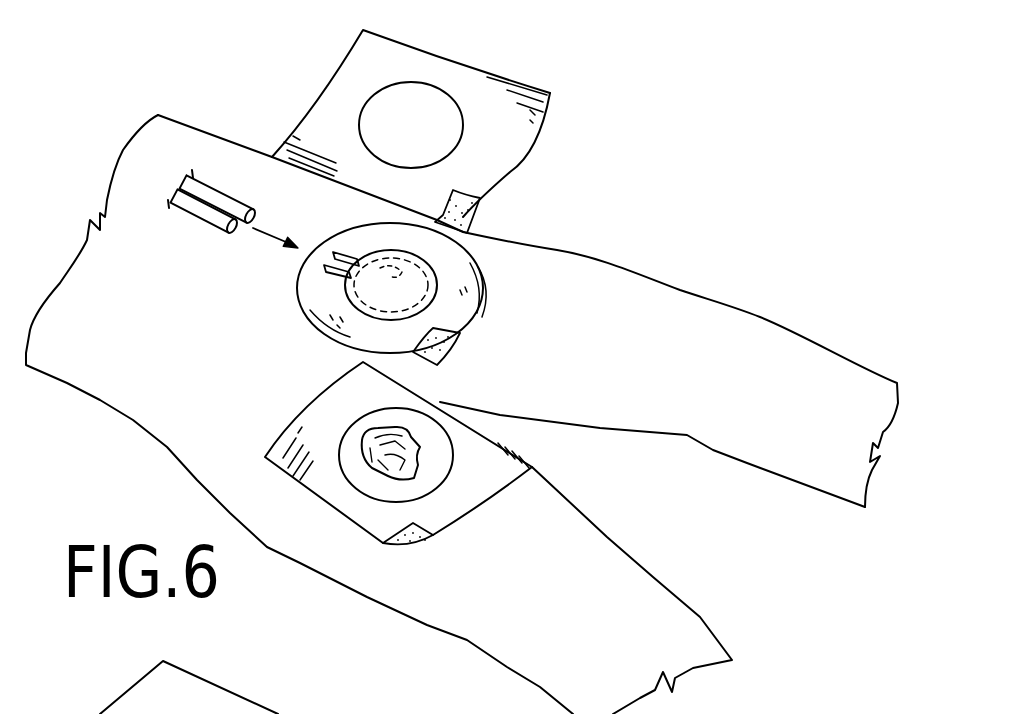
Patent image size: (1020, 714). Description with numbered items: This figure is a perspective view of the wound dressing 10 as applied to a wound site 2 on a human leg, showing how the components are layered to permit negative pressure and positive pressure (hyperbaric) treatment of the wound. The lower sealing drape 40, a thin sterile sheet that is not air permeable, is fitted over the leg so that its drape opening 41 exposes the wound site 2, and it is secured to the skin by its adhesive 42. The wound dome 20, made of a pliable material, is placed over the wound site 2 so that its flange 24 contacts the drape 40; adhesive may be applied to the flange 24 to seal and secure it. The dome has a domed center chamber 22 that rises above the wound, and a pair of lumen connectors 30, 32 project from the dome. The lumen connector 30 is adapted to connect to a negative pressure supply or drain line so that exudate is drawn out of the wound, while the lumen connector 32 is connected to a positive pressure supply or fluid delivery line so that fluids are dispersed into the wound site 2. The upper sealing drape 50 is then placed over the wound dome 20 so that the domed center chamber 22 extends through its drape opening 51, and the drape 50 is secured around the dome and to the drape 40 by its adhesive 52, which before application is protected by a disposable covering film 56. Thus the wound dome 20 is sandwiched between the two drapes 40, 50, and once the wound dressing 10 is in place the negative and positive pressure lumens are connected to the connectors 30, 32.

The wound site 2 is at (375, 412).
The wound dressing 10 is at (705, 95).
The wound dome 20 is at (292, 317).
The domed center chamber 22 is at (433, 290).
The flange 24 is at (460, 317).
The lumen connector 30 is at (300, 293).
The lumen connector 32 is at (352, 262).
The sealing drape 40 is at (463, 483).
The drape opening 41 is at (430, 450).
The adhesive 42 is at (411, 540).
The sealing drape 50 is at (527, 64).
The drape opening 51 is at (430, 143).
The adhesive 52 is at (465, 192).
The disposable covering film 56 is at (462, 221).